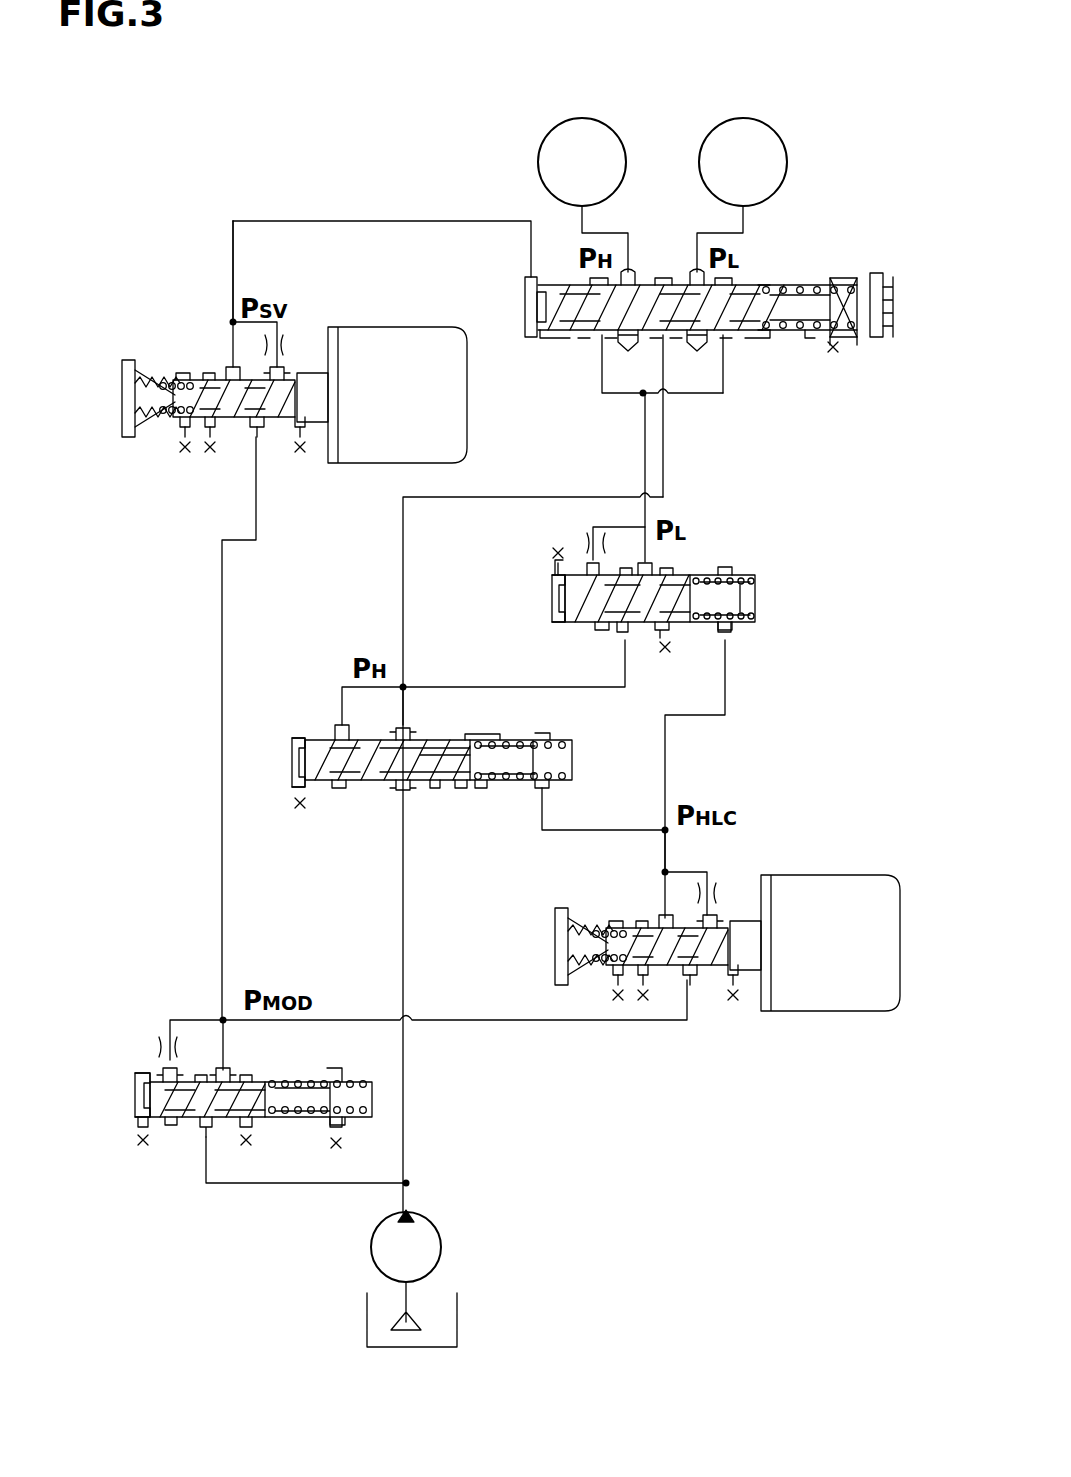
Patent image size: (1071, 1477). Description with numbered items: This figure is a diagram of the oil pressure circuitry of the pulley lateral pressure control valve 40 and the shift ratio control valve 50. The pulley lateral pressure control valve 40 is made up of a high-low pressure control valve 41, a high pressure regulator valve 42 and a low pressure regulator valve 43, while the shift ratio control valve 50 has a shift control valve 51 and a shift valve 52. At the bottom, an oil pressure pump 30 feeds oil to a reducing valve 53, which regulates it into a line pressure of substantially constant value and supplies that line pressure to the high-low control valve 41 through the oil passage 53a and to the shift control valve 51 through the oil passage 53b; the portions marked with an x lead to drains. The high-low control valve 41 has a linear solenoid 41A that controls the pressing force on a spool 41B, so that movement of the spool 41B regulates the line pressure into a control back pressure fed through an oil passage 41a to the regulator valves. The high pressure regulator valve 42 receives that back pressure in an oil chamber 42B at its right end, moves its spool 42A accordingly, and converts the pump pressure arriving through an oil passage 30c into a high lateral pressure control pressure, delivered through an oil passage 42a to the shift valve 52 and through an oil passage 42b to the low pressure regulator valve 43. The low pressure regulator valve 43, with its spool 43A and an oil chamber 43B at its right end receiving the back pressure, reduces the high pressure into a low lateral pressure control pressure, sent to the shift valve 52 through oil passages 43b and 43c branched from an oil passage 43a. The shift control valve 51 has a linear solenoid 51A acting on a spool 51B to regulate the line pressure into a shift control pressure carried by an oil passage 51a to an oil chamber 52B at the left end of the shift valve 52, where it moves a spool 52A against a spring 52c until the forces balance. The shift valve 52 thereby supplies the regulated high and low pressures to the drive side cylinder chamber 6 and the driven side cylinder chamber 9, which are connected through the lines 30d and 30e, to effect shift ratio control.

The drive side cylinder chamber 6 is at (590, 175).
The driven side cylinder chamber 9 is at (752, 175).
The oil pressure pump 30 is at (445, 1244).
The oil passage 30c is at (407, 1120).
The high pressure line 30d is at (598, 232).
The low pressure line 30e is at (745, 220).
The pulley lateral pressure control valve 40 is at (760, 775).
The high-low pressure control valve 41 is at (727, 948).
The oil passage 41a is at (668, 855).
The linear solenoid 41A is at (830, 983).
The spool 41B is at (594, 916).
The high pressure regulator valve 42 is at (474, 757).
The oil passage 42a is at (404, 592).
The oil passage 42b is at (432, 685).
The spool 42A is at (454, 757).
The oil chamber 42B is at (568, 760).
The low pressure regulator valve 43 is at (706, 596).
The oil passage 43a is at (644, 443).
The oil passage 43b is at (600, 376).
The oil passage 43c is at (728, 375).
The spool 43A is at (641, 621).
The oil chamber 43B is at (756, 597).
The shift ratio control valve 50 is at (387, 207).
The shift control valve 51 is at (294, 373).
The oil passage 51a is at (234, 282).
The linear solenoid 51A is at (350, 451).
The spool 51B is at (200, 383).
The shift valve 52 is at (691, 295).
The spool 52A is at (525, 298).
The oil chamber 52B is at (526, 323).
The spring 52c is at (803, 335).
The reducing valve 53 is at (151, 1057).
The oil passage 53a is at (468, 1020).
The oil passage 53b is at (225, 903).